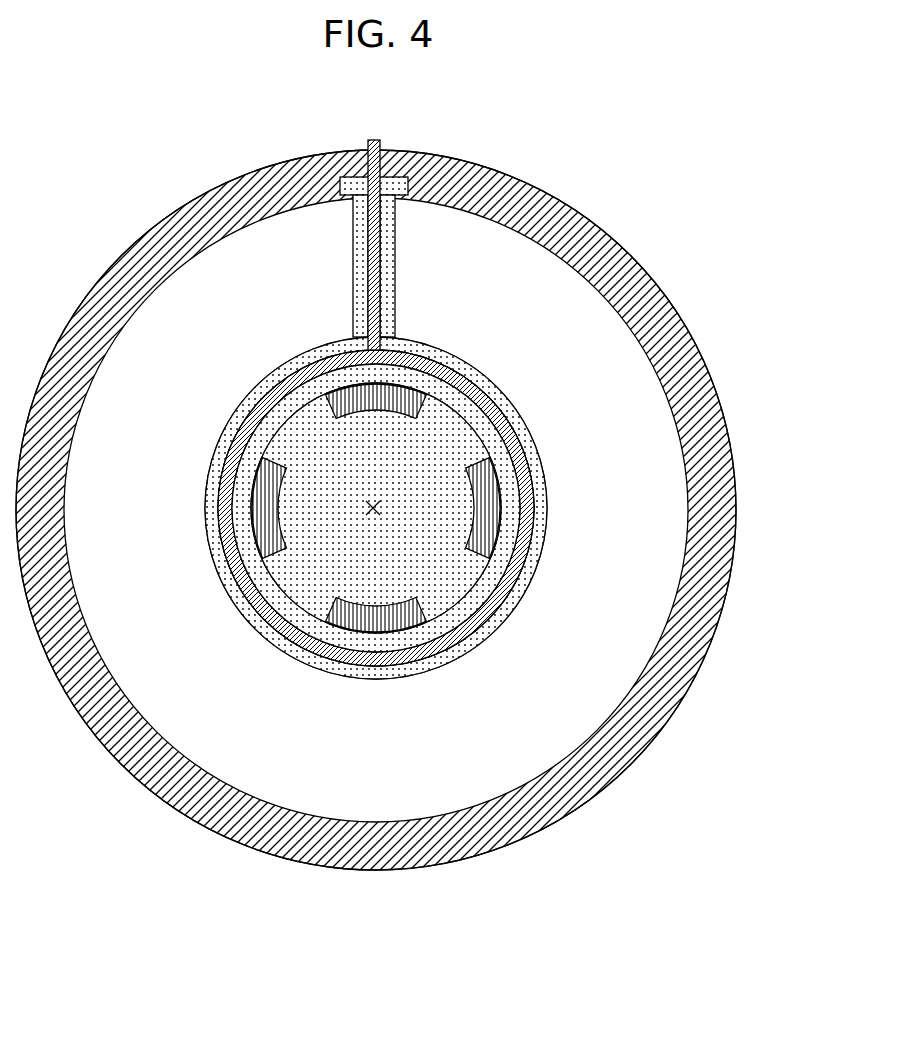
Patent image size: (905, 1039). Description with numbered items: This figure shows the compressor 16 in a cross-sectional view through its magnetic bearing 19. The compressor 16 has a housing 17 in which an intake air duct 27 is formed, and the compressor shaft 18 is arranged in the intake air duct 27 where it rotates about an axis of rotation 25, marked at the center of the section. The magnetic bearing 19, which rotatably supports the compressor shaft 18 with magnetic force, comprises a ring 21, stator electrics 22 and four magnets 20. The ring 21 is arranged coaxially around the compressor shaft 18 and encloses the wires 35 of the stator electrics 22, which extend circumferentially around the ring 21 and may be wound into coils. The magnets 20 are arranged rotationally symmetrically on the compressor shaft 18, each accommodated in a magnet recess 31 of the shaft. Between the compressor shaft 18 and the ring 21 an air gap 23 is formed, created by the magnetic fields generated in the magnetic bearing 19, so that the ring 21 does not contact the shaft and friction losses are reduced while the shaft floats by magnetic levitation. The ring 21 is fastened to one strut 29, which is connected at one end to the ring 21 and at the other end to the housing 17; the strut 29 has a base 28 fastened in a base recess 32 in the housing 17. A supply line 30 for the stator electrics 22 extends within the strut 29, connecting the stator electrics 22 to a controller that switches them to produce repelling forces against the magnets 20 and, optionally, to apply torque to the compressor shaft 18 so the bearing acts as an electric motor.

The compressor 16 is at (156, 166).
The housing 17 is at (229, 176).
The compressor shaft 18 is at (358, 564).
The magnetic bearing 19 is at (245, 660).
The magnets 20 is at (455, 365).
The ring 21 is at (547, 468).
The stator electrics 22 is at (524, 414).
The air gap 23 is at (480, 647).
The axis of rotation 25 is at (372, 508).
The intake air duct 27 is at (357, 752).
The base 28 is at (347, 152).
The strut 29 is at (353, 302).
The supply line 30 is at (393, 302).
The magnet recess 31 is at (340, 413).
The base recess 32 is at (391, 143).
The wires 35 is at (530, 430).